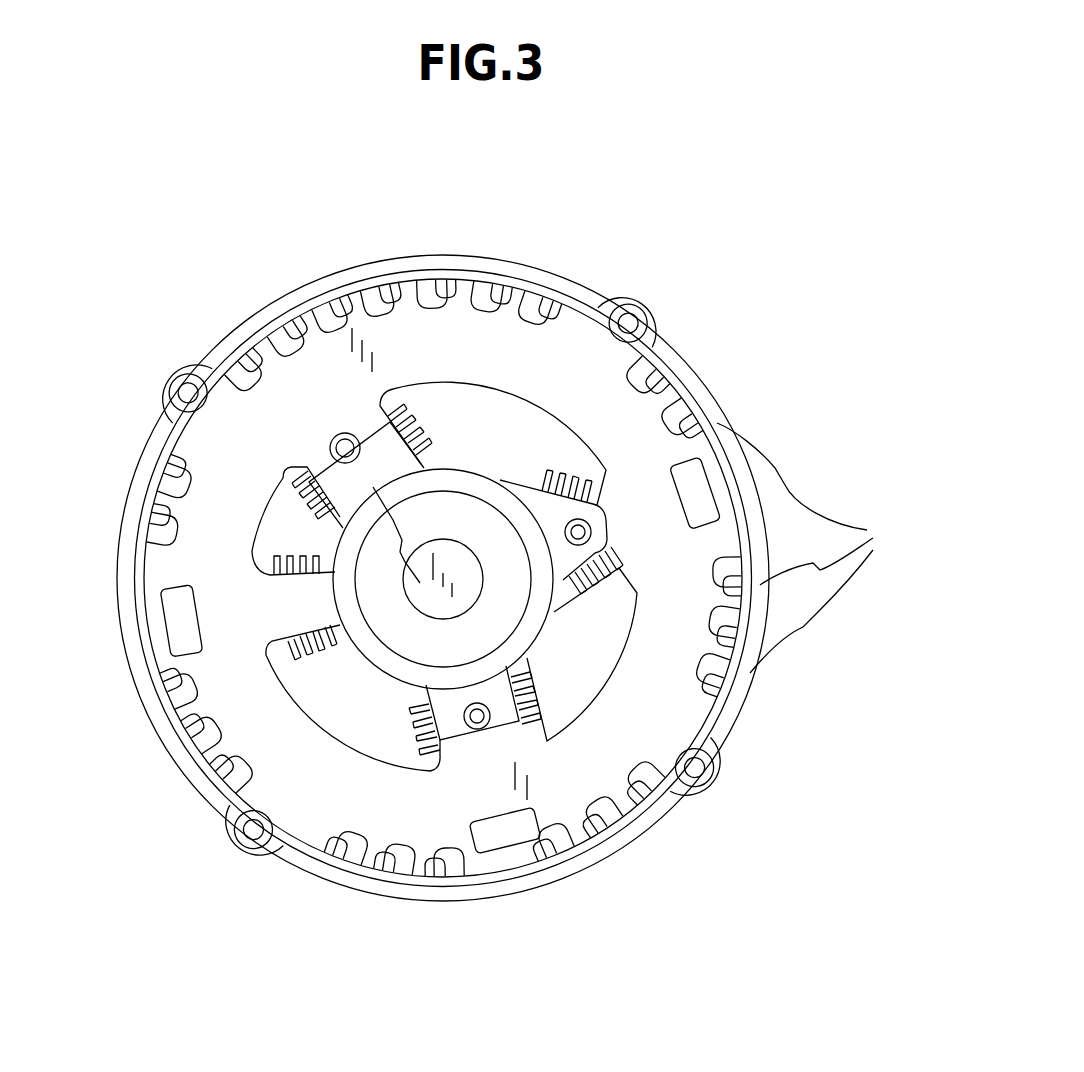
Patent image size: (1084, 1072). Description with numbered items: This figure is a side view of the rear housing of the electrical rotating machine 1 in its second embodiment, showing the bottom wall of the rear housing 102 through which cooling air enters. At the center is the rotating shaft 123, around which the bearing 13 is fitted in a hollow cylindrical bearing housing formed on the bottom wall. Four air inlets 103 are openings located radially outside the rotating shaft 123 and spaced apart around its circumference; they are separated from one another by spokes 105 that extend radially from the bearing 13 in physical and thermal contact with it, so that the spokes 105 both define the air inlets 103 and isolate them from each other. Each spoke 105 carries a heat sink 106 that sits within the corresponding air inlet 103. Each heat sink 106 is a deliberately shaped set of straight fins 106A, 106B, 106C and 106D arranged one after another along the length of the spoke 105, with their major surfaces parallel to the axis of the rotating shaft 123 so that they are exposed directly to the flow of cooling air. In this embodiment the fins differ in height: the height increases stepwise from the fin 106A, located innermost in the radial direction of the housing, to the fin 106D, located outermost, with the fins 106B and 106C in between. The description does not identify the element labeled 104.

The electrical rotating machine 1 is at (178, 246).
The rear housing 102 is at (443, 578).
The air inlets 103 is at (632, 305).
The bracket 104 is at (818, 548).
The spokes 105 is at (298, 335).
The heat sinks 106 is at (295, 518).
The fin 106A is at (517, 400).
The fin 106B is at (449, 428).
The fin 106C is at (426, 432).
The fin 106D is at (406, 436).
The bearing 13 is at (500, 582).
The rotating shaft 123 is at (366, 475).